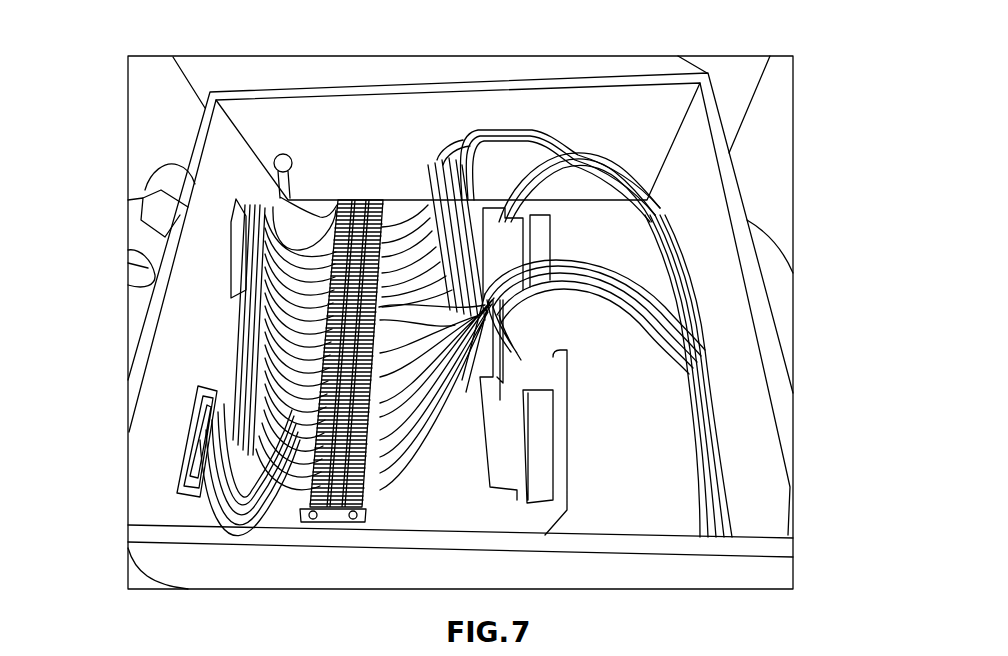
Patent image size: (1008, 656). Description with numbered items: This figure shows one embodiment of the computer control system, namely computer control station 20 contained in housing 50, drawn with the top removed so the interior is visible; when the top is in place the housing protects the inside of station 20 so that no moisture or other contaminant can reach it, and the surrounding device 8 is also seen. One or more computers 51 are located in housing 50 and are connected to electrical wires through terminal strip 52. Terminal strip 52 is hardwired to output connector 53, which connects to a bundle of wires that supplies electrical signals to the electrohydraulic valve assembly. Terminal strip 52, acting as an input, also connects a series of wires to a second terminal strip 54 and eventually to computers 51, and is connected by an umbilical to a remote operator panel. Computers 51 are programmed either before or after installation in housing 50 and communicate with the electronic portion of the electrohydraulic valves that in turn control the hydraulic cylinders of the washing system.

The device housing 8 is at (785, 282).
The computer control station 20 is at (350, 146).
The housing 50 is at (728, 152).
The computers 51 is at (600, 245).
The terminal strip 52 is at (178, 464).
The output connector 53 is at (165, 213).
The terminal strip 54 is at (337, 357).